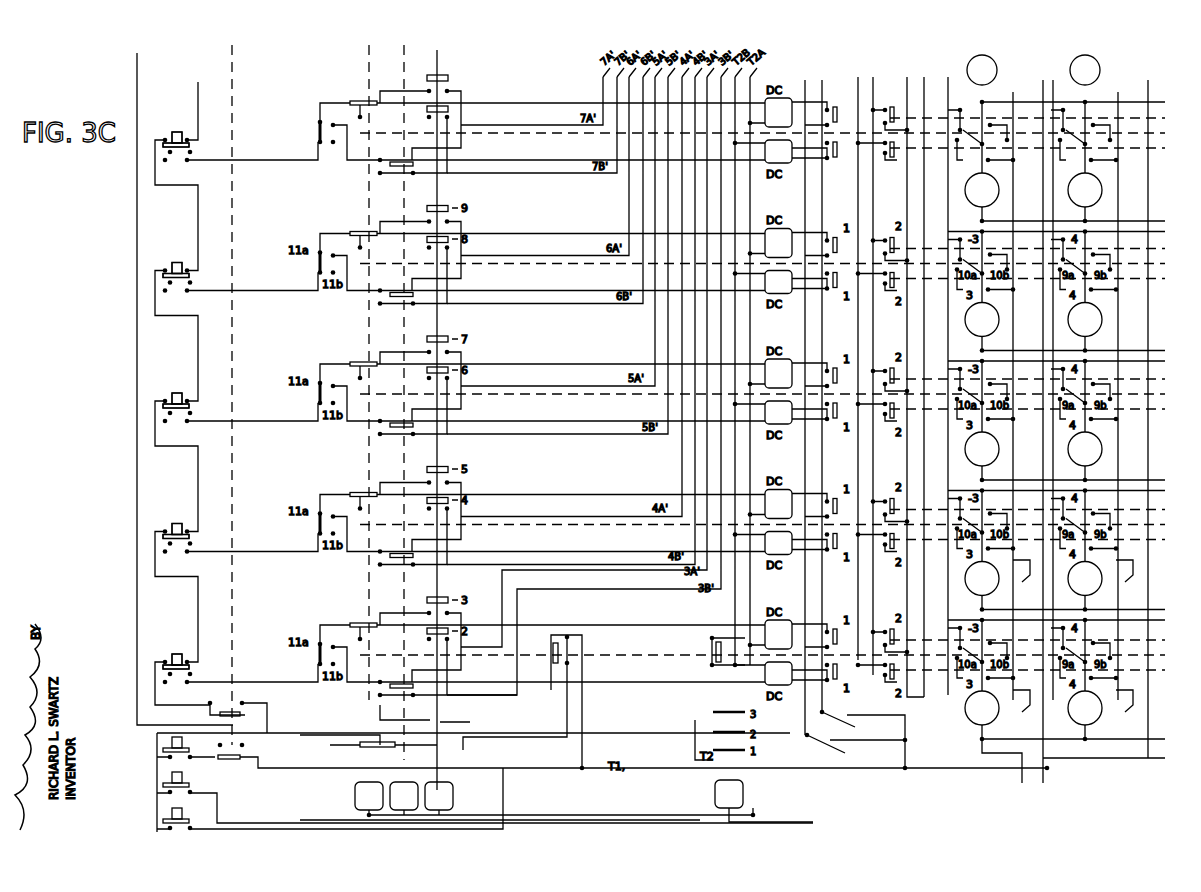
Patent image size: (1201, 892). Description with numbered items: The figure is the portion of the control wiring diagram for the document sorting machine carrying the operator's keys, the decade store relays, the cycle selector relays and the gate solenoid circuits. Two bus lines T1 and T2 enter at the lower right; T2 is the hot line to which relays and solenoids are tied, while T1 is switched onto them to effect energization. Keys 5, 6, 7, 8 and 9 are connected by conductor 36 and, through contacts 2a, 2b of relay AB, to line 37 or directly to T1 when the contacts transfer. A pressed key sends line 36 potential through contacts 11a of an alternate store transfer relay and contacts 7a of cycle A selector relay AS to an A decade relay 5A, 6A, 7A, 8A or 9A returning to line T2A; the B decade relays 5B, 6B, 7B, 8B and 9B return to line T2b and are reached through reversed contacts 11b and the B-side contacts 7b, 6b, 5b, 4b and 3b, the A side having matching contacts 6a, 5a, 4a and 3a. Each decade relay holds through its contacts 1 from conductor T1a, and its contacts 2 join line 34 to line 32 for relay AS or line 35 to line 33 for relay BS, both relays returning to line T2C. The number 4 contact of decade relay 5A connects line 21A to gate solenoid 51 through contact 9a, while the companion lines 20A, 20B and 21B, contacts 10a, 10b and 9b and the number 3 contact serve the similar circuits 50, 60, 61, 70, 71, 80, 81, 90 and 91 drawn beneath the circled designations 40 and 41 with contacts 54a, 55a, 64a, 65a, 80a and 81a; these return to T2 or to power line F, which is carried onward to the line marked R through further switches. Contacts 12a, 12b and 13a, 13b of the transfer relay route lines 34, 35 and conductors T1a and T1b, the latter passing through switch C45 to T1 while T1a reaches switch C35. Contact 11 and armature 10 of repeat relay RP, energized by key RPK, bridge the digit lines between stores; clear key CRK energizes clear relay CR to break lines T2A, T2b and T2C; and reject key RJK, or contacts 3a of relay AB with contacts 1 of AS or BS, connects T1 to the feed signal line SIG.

The line 37 is at (142, 59).
The conductor 36 is at (205, 78).
The key 5 is at (178, 129).
The key 6 is at (178, 260).
The key 7 is at (178, 391).
The key 8 is at (178, 521).
The key 9 is at (178, 652).
The contacts 11a is at (315, 129).
The contacts 11b is at (332, 154).
The contacts 7a is at (373, 121).
The relay contact 7b is at (388, 155).
The relay contact 6a is at (373, 251).
The relay contact 6b is at (388, 285).
The relay contact 5a is at (373, 382).
The relay contact 5b is at (388, 416).
The relay contact 4a is at (373, 512).
The relay contact 4b is at (388, 546).
The contacts 3a is at (301, 680).
The contacts 3b is at (388, 677).
The contacts 2a is at (263, 722).
The contacts 2b is at (237, 710).
The relay contact 11 is at (452, 78).
The movable arm 10 is at (452, 109).
The contacts 1 is at (846, 132).
The contacts 2 is at (898, 134).
The contact 3 is at (972, 138).
The contact 4 is at (1073, 138).
The decade relay 5A is at (778, 112).
The decade relay 5B is at (778, 151).
The decade relay 6A is at (778, 243).
The decade relay 6B is at (778, 282).
The decade relay 7A is at (778, 373).
The decade relay 7B is at (778, 412).
The decade relay 8A is at (778, 504).
The decade relay 8B is at (778, 543).
The decade relay 9A is at (778, 634).
The decade relay 9B is at (778, 673).
The relay contact 10a is at (967, 146).
The relay contact 10b is at (999, 146).
The contact 9a is at (1068, 146).
The relay contact 9b is at (1100, 146).
The conductor 20A is at (959, 386).
The conductor 20B is at (1010, 391).
The line 21A is at (1064, 390).
The conductor 21B is at (1115, 391).
The line 32 is at (925, 379).
The line 33 is at (911, 377).
The line 34 is at (875, 368).
The line 35 is at (855, 360).
The indicator lamp 40 is at (982, 70).
The indicator lamp 41 is at (1085, 70).
The indicator lamp 50 is at (980, 191).
The gate solenoid 51 is at (1084, 191).
The indicator lamp 60 is at (980, 320).
The indicator lamp 61 is at (1084, 320).
The indicator lamp 70 is at (980, 450).
The indicator lamp 71 is at (1084, 450).
The indicator lamp 80 is at (980, 579).
The indicator lamp 81 is at (1084, 579).
The indicator lamp 90 is at (980, 709).
The indicator lamp 91 is at (1084, 709).
The contacts 12a is at (711, 650).
The contacts 12b is at (711, 666).
The contacts 13a is at (553, 701).
The contacts 13b is at (533, 703).
The relay contact 54a is at (1025, 564).
The relay contact 55a is at (1128, 564).
The relay contact 64a is at (1025, 694).
The relay contact 65a is at (1128, 694).
The relay contact 80a is at (1009, 594).
The relay contact 81a is at (1112, 594).
The switch C35 is at (864, 736).
The switch C45 is at (856, 746).
The bus line T1 is at (1107, 424).
The bus line T2 is at (1082, 447).
The conductor T1a is at (832, 387).
The line T1b is at (798, 400).
The line T2A is at (779, 596).
The line T2b is at (707, 608).
The line T2C is at (769, 788).
The power line F is at (1171, 490).
The reverse terminal R is at (1172, 480).
The feed cycle signal line SIG is at (827, 826).
The cycle A selector relay AS is at (555, 799).
The cycle B selector relay BS is at (404, 798).
The repeat relay RP is at (439, 798).
The clear relay CR is at (556, 801).
The reject key RJK is at (155, 746).
The clear button CRK is at (155, 783).
The repeat key RPK is at (155, 819).